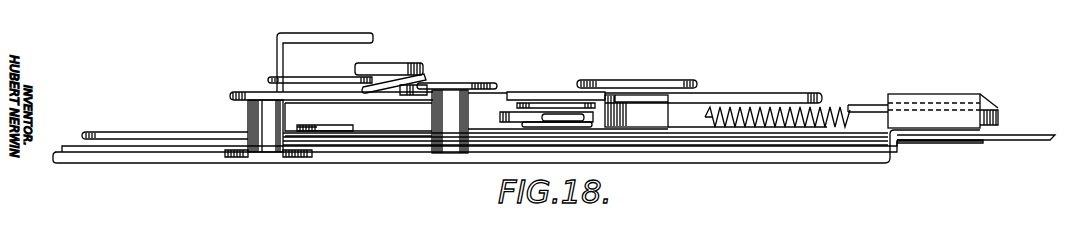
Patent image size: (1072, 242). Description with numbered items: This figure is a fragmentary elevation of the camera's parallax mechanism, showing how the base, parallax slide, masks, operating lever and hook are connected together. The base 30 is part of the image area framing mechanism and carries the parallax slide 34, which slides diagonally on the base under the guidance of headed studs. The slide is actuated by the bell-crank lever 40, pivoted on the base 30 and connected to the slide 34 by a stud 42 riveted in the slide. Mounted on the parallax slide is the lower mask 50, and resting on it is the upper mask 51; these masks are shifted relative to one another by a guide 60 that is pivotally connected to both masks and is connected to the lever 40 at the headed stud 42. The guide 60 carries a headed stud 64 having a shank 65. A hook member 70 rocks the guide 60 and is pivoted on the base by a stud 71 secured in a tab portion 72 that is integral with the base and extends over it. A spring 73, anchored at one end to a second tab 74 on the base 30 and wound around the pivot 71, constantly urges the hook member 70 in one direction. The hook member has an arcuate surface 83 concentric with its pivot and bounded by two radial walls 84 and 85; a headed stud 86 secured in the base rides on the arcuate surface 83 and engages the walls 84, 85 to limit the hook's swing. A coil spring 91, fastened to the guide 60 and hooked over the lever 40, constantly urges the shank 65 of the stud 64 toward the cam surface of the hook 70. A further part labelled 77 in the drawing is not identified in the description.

The base 30 is at (783, 160).
The parallax slide 34 is at (75, 148).
The bell-crank lever 40 is at (998, 110).
The stud 42 is at (543, 106).
The lower mask 50 is at (970, 143).
The upper mask 51 is at (1015, 138).
The guide 60 is at (390, 134).
The headed stud 64 is at (673, 83).
The shank 65 is at (631, 108).
The hook member 70 is at (770, 97).
The stud 71 is at (393, 68).
The tab portion 72 is at (330, 105).
The spring 73 is at (272, 77).
The second tab 74 is at (310, 41).
The post 77 is at (268, 143).
The arcuate surface 83 is at (490, 90).
The radial wall 84 is at (400, 97).
The radial wall 85 is at (508, 100).
The headed stud 86 is at (443, 95).
The coil spring 91 is at (835, 110).